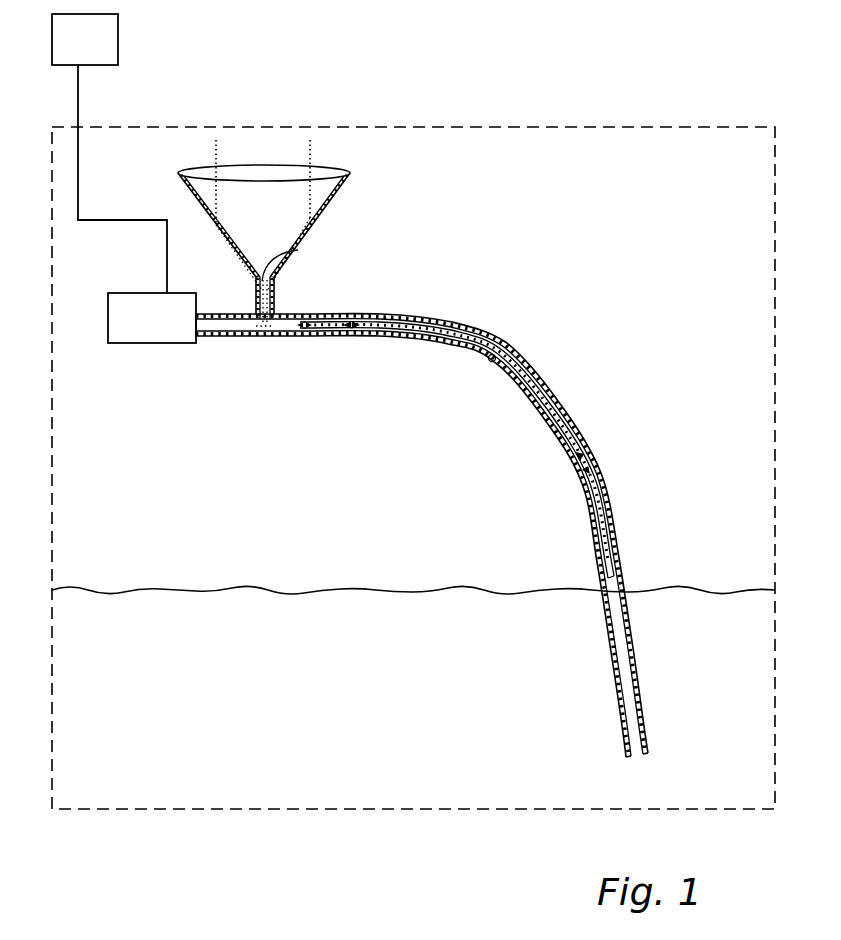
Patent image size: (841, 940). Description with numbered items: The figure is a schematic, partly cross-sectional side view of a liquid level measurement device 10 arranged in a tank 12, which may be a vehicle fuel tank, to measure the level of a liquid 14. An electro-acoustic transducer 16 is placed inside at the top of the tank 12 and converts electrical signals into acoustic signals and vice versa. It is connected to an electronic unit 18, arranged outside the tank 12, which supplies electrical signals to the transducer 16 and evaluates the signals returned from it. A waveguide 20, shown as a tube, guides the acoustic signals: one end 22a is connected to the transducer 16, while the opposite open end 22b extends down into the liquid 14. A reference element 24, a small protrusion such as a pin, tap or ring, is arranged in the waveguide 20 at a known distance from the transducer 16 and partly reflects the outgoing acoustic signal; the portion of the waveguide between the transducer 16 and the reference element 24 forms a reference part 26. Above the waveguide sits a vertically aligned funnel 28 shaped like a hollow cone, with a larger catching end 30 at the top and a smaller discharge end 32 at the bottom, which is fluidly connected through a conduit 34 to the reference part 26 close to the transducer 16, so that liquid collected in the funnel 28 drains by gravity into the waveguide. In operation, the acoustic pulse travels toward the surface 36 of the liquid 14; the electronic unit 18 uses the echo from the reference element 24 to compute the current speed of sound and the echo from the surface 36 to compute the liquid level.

The liquid level measurement device 10 is at (146, 261).
The tank 12 is at (571, 128).
The liquid 14 is at (279, 674).
The transducer 16 is at (108, 319).
The electronic unit 18 is at (118, 37).
The waveguide 20 is at (600, 479).
The end of the waveguide 22a is at (197, 324).
The open end of the waveguide 22b is at (642, 757).
The reference element 24 is at (491, 362).
The reference part 26 is at (480, 362).
The funnel 28 is at (316, 218).
The catching end 30 is at (348, 173).
The discharge end 32 is at (298, 250).
The conduit 34 is at (274, 294).
The surface of the liquid 36 is at (620, 573).